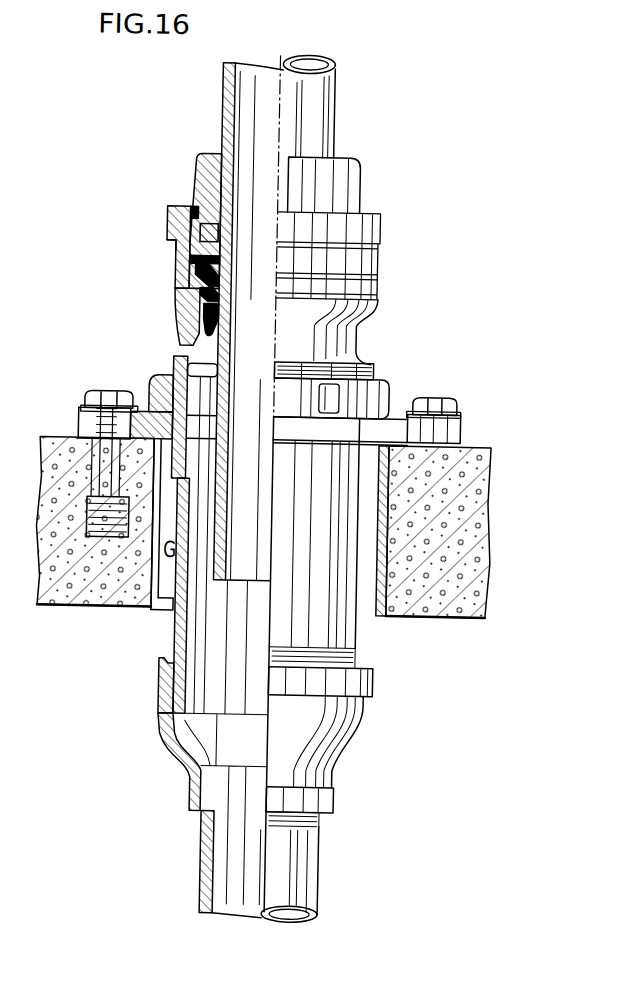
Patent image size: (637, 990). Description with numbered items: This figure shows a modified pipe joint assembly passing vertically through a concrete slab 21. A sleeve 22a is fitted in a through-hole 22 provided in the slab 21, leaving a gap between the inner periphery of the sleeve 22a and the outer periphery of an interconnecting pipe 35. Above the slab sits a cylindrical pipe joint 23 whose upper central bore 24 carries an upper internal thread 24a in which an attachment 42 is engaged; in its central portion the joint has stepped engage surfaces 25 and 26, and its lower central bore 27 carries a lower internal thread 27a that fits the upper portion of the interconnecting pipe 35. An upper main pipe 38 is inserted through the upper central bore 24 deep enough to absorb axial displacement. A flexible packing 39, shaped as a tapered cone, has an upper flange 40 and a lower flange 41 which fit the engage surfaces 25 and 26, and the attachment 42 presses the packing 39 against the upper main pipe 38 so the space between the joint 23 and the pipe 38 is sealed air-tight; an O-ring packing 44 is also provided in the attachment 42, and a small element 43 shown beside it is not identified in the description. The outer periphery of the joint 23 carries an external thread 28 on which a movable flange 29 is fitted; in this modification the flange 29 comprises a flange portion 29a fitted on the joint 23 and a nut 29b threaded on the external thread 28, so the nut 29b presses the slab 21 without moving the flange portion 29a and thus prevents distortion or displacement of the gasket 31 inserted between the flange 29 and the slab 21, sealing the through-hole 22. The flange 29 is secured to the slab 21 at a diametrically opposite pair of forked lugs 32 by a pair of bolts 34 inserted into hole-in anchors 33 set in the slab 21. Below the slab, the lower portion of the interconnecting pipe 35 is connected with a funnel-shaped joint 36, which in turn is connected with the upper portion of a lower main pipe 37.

The concrete slab 21 is at (55, 605).
The through-hole 22 is at (168, 616).
The sleeve 22a is at (154, 615).
The cylindrical pipe joint 23 is at (377, 216).
The upper central bore 24 is at (189, 263).
The upper internal thread 24a is at (164, 217).
The stepped engage surface 25 is at (174, 284).
The stepped engage surface 26 is at (197, 319).
The lower central bore 27 is at (178, 360).
The lower internal thread 27a is at (187, 410).
The external thread 28 is at (365, 359).
The movable flange 29 is at (398, 377).
The flange portion 29a is at (143, 416).
The nut 29b is at (155, 377).
The gasket 31 is at (305, 445).
The forked lugs 32 is at (78, 417).
The hole-in anchors 33 is at (93, 481).
The bolts 34 is at (80, 431).
The interconnecting pipe 35 is at (193, 634).
The funnel-shaped joint 36 is at (356, 739).
The lower main pipe 37 is at (313, 858).
The upper main pipe 38 is at (316, 99).
The flexible packing 39 is at (215, 298).
The upper flange 40 is at (215, 269).
The lower flange 41 is at (210, 314).
The attachment 42 is at (202, 156).
The seal ring 43 is at (186, 211).
The O-ring packing 44 is at (212, 234).